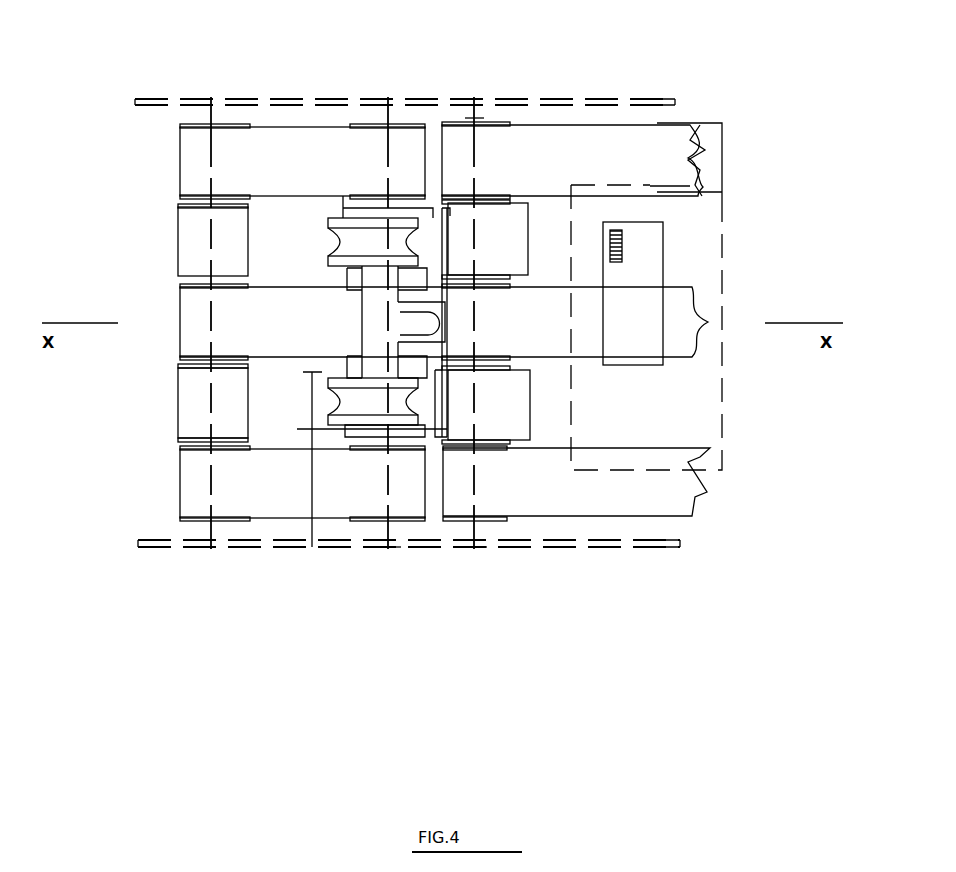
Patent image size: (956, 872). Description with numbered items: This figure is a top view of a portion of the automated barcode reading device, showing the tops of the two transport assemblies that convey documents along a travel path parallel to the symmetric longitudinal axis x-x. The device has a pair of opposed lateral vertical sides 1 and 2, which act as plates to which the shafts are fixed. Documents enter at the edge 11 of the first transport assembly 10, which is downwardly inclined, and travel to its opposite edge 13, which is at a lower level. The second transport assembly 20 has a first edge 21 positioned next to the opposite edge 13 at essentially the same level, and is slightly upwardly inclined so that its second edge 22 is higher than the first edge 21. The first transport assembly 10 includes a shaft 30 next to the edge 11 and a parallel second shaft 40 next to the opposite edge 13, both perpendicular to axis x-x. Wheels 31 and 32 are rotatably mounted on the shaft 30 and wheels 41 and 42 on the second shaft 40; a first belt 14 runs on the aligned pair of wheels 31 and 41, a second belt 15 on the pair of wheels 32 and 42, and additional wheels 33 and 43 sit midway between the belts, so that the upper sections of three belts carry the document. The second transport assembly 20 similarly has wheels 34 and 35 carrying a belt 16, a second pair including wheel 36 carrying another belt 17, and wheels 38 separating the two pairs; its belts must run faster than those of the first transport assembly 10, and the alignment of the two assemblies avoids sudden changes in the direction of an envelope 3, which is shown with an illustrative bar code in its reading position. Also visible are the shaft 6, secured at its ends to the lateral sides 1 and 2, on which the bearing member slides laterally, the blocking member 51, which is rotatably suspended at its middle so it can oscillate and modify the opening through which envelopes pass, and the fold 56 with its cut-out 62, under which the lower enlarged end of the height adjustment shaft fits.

The lateral vertical side 1 is at (157, 63).
The lateral vertical side 2 is at (463, 545).
The envelope 3 is at (676, 400).
The shaft 6 is at (277, 540).
The first transport assembly 10 is at (318, 82).
The edge 11 is at (145, 297).
The opposite edge 13 is at (440, 118).
The first belt 14 is at (282, 145).
The second belt 15 is at (305, 488).
The belt 16 is at (627, 155).
The belt 17 is at (627, 483).
The second transport assembly 20 is at (568, 78).
The first edge 21 is at (495, 117).
The second edge 22 is at (710, 137).
The shaft 30 is at (210, 532).
The wheel 31 is at (178, 127).
The wheel 32 is at (180, 448).
The wheel 33 is at (196, 216).
The wheel 34 is at (503, 123).
The wheel 35 is at (705, 153).
The wheel 36 is at (503, 520).
The wheel 38 is at (509, 402).
The second shaft 40 is at (405, 525).
The wheel 41 is at (405, 118).
The wheel 42 is at (345, 545).
The wheel 43 is at (353, 212).
The blocking member 51 is at (358, 240).
The fold 56 is at (397, 352).
The cut-out 62 is at (397, 323).